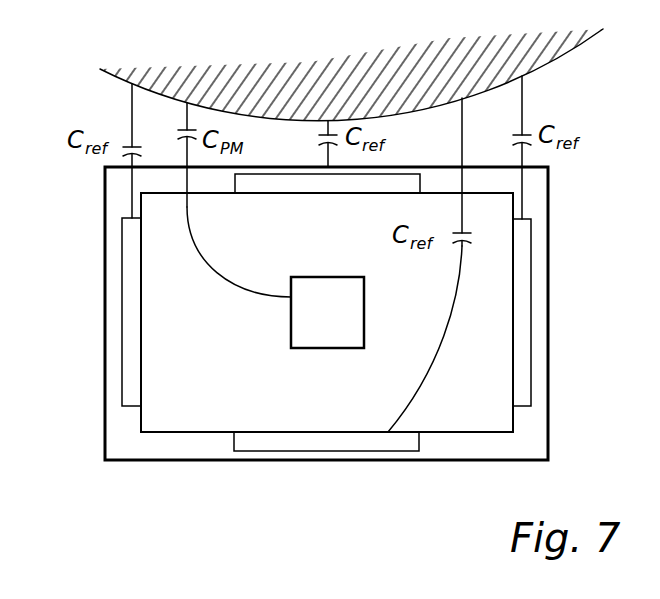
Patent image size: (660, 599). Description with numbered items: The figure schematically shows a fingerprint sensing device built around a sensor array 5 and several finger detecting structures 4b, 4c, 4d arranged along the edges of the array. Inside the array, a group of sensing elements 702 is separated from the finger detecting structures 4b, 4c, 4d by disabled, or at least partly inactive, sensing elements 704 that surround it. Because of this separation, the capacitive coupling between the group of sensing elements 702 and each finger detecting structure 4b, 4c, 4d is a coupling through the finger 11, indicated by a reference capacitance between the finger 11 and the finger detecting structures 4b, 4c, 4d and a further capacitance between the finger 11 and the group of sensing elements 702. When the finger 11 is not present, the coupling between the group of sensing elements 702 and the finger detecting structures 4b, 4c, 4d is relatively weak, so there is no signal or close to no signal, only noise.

The finger 11 is at (278, 56).
The sensor array 5 is at (490, 234).
The disabled sensing elements 704 is at (187, 400).
The finger detecting structure 4d is at (403, 181).
The finger detecting structure 4b is at (393, 442).
The finger detecting structure 4c is at (128, 327).
The group of sensing elements 702 is at (325, 333).